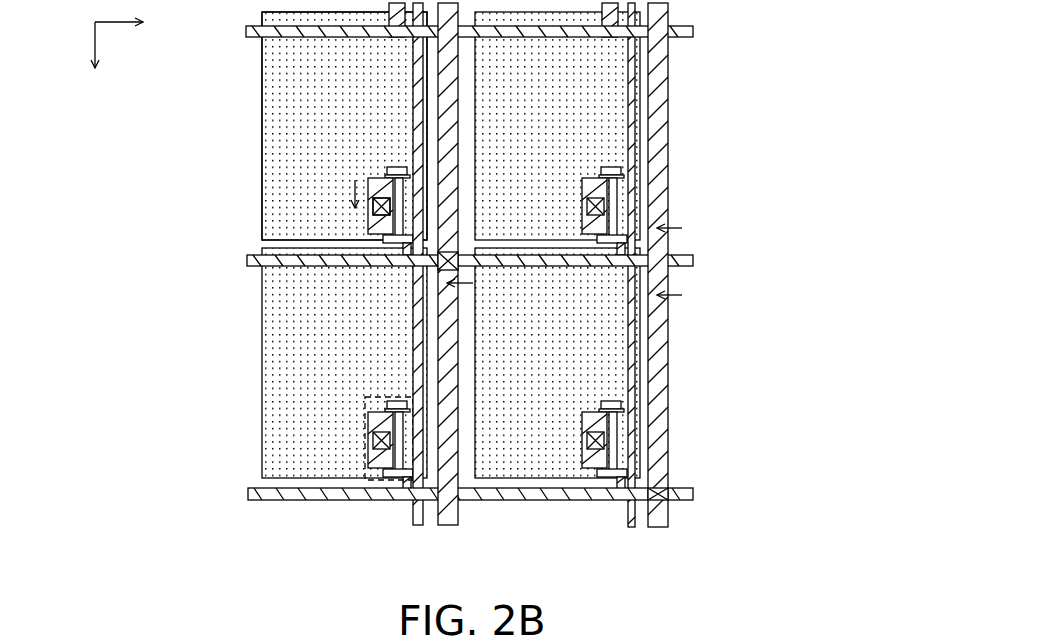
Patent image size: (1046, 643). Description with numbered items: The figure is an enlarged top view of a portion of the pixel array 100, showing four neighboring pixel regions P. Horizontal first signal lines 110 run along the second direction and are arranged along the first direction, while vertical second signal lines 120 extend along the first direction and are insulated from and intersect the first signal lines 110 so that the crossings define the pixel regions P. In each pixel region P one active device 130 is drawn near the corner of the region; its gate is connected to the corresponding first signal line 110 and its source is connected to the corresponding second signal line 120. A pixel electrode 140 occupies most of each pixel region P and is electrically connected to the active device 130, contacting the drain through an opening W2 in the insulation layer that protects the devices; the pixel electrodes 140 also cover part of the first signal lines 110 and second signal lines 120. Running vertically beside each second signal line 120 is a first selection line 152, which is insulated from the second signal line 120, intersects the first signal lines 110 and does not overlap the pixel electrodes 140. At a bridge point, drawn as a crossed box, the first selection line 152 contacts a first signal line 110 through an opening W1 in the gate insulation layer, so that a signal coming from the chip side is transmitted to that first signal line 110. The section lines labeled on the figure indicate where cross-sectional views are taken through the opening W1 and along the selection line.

The pixel array 100 is at (445, 323).
The first signal line 110 is at (248, 494).
The second signal line 120 is at (419, 527).
The active device 130 is at (367, 500).
The pixel electrode 140 is at (262, 333).
The first selection line 152 is at (453, 527).
The opening of gate insulation layer W1 is at (437, 268).
The opening of insulation layer W2 is at (372, 213).
The pixel region P is at (212, 145).